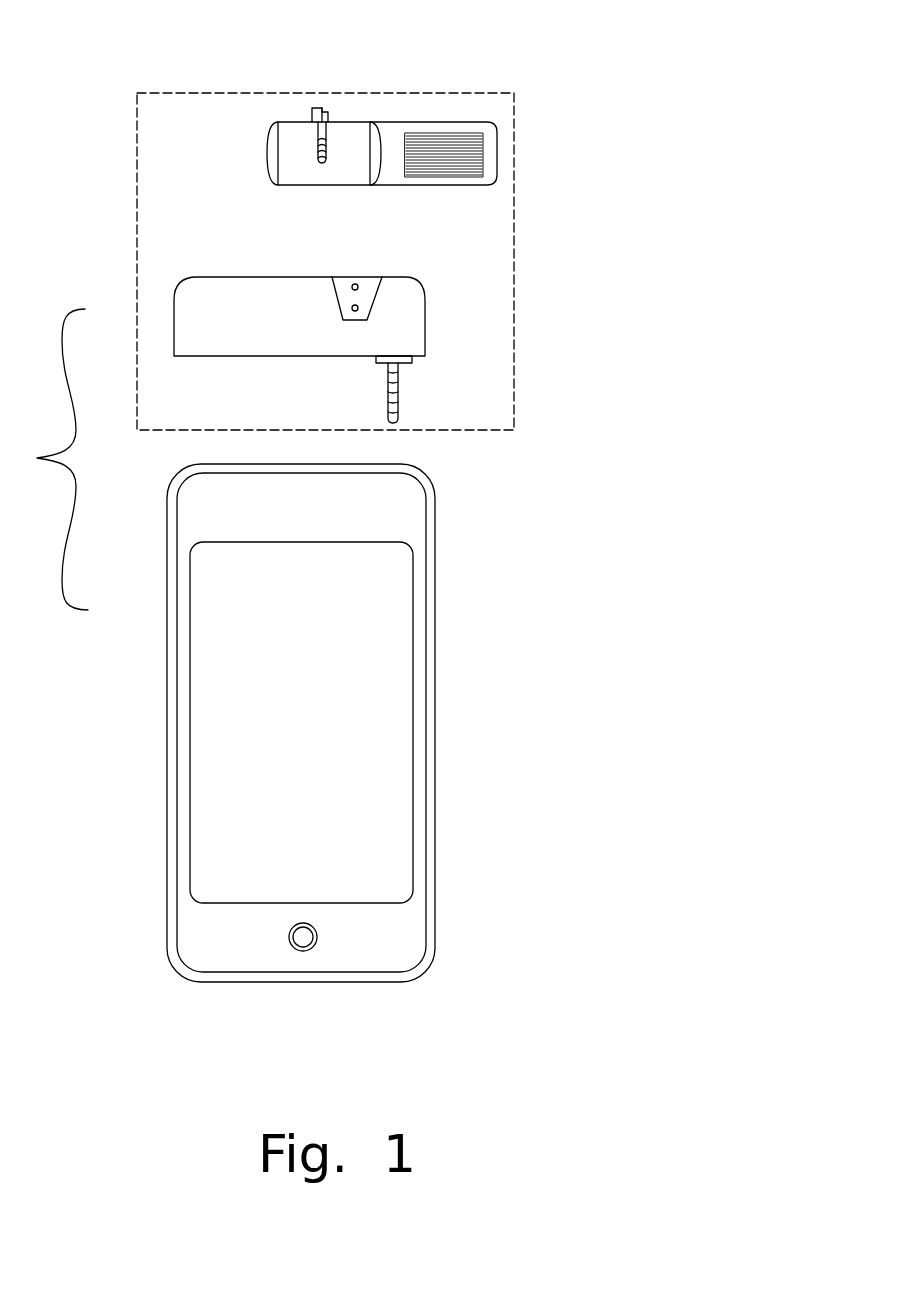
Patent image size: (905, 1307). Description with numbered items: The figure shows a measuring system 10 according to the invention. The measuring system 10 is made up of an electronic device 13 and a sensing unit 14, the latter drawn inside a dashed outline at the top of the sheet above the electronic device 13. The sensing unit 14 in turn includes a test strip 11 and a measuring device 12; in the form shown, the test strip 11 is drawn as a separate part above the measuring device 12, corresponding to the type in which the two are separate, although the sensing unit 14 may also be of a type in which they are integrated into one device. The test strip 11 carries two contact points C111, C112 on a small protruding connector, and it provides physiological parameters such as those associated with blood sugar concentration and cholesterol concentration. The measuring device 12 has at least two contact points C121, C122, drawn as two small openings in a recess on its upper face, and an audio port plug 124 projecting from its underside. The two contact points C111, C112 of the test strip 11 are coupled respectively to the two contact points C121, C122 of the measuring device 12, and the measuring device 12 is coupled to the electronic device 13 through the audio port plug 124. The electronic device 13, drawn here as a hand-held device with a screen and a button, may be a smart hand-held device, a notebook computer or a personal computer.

The measuring system 10 is at (473, 93).
The test strip 11 is at (498, 155).
The measuring device 12 is at (172, 330).
The electronic device 13 is at (436, 604).
The sensing unit 14 is at (515, 257).
The audio port plug 124 is at (400, 391).
The contact point C111 is at (329, 145).
The contact point C112 is at (317, 152).
The contact point C121 is at (355, 284).
The contact point C122 is at (352, 308).